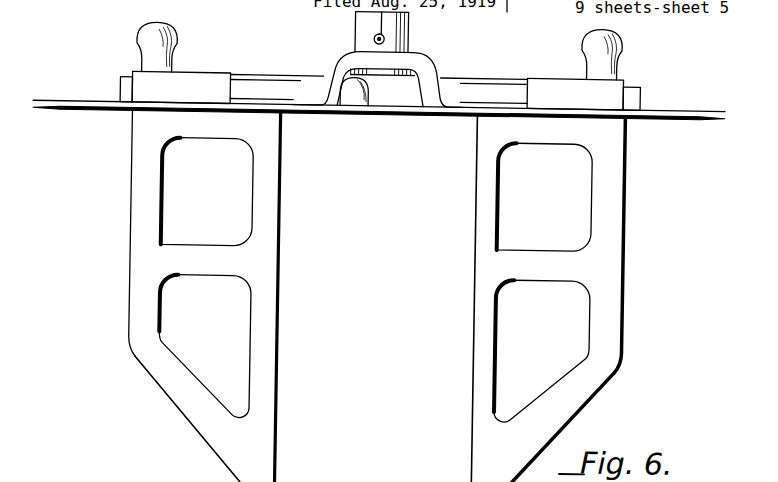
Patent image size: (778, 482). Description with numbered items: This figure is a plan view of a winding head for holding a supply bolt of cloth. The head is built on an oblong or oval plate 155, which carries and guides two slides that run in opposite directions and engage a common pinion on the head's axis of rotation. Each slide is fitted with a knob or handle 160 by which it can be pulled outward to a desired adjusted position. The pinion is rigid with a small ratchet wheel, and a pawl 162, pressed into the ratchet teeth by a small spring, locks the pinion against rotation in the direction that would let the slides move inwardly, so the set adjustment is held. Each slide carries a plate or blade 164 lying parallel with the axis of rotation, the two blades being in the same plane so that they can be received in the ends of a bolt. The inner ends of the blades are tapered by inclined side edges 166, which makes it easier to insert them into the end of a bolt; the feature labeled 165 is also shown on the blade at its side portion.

The plate 155 is at (390, 113).
The knob 160 is at (252, 44).
The pawl 162 is at (340, 78).
The blade 164 is at (527, 141).
The side wall 165 is at (720, 272).
The inclined side edge 166 is at (188, 419).